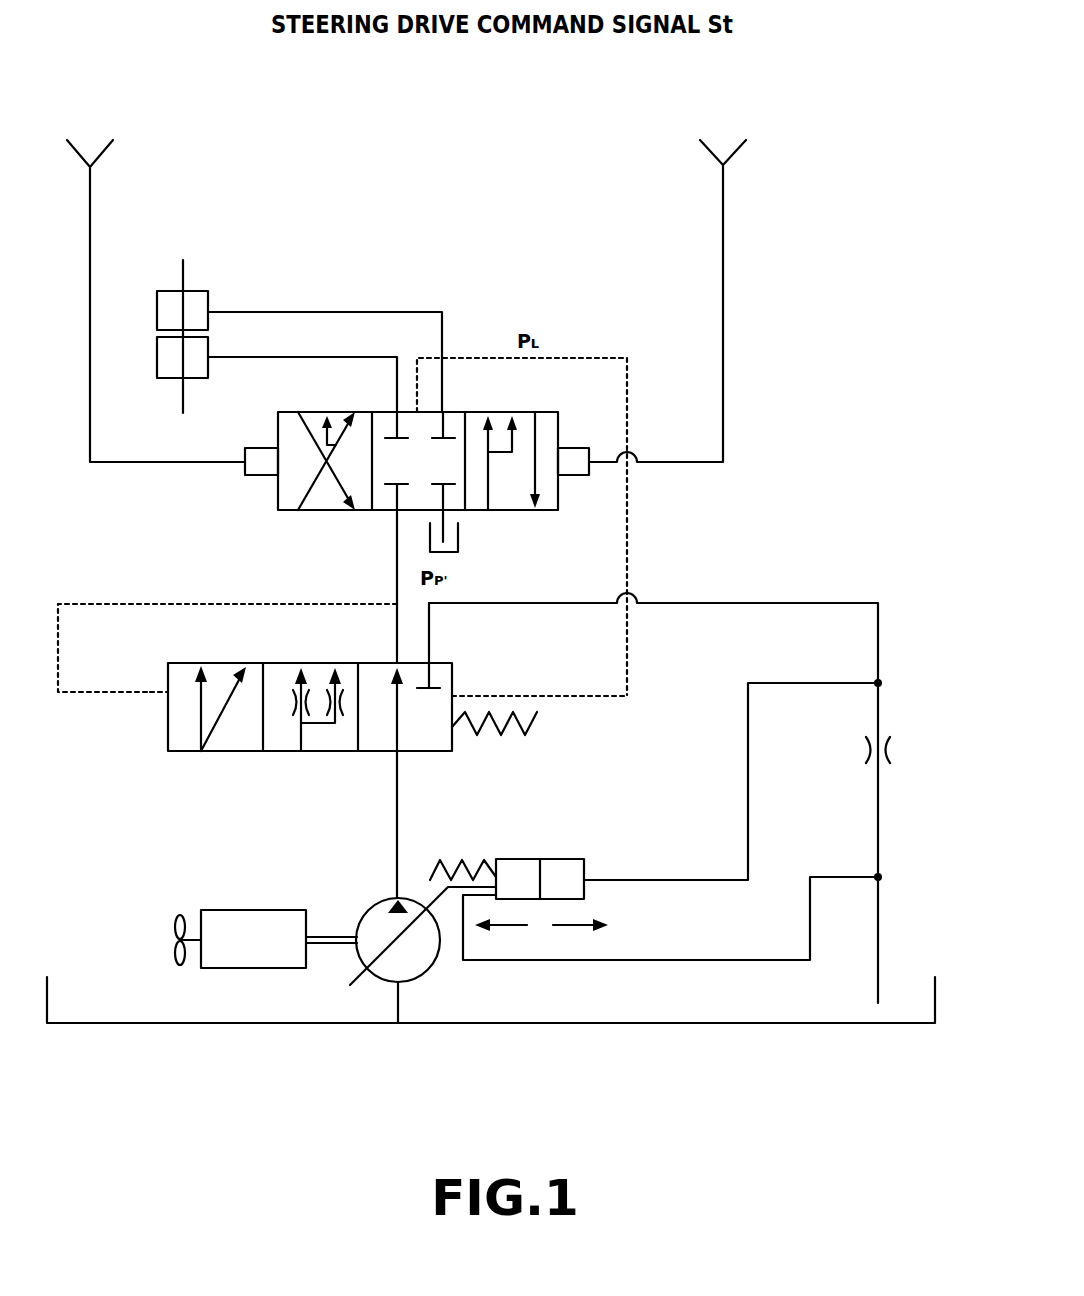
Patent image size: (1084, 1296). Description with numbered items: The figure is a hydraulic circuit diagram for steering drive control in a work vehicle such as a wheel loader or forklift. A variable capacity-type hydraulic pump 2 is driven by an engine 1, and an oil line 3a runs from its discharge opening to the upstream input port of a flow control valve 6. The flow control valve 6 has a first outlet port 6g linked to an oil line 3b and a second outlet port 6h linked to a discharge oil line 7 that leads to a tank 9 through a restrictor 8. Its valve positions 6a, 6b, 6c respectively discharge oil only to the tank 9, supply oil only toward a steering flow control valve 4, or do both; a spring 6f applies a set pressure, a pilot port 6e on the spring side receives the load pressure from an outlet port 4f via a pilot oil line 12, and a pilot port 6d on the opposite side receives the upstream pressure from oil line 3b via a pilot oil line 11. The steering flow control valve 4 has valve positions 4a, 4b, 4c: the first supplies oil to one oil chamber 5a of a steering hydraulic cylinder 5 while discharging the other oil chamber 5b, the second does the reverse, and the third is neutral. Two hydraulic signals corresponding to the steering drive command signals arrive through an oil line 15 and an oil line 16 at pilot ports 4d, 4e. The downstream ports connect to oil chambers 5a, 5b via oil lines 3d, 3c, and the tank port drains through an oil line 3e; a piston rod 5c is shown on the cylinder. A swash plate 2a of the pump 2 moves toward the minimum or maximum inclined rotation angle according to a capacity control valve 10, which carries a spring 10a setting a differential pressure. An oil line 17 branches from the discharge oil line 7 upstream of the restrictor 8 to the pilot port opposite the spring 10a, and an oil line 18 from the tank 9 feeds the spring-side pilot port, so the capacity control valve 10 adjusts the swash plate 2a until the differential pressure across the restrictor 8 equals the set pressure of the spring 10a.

The engine 1 is at (243, 910).
The variable capacity-type hydraulic pump 2 is at (415, 947).
The swash plate 2a is at (432, 917).
The oil line 3a is at (397, 844).
The oil line 3b is at (395, 585).
The oil line 3c is at (283, 357).
The oil line 3d is at (330, 312).
The oil line 3e is at (445, 518).
The steering flow control valve 4 is at (451, 465).
The valve position 4a is at (305, 512).
The valve position 4b is at (553, 512).
The valve position 4c is at (382, 512).
The pilot port 4d is at (255, 478).
The pilot port 4e is at (578, 478).
The outlet port 4f is at (418, 410).
The steering hydraulic cylinder 5 is at (153, 329).
The oil chamber 5a is at (168, 291).
The oil chamber 5b is at (164, 378).
The piston rod 5c is at (185, 268).
The flow control valve 6 is at (348, 708).
The valve position 6a is at (185, 753).
The valve position 6b is at (372, 753).
The valve position 6c is at (287, 753).
The pilot port 6d is at (168, 690).
The pilot port 6e is at (452, 690).
The spring 6f is at (500, 735).
The first outlet port 6g is at (396, 660).
The second outlet port 6h is at (430, 655).
The discharge oil line 7 is at (755, 603).
The restrictor 8 is at (898, 744).
The tank 9 is at (452, 553).
The capacity control valve 10 is at (530, 842).
The spring 10a is at (458, 864).
The pilot oil line 11 is at (116, 604).
The pilot oil line 12 is at (627, 527).
The oil line 15 is at (92, 218).
The oil line 16 is at (725, 213).
The oil line 17 is at (748, 745).
The oil line 18 is at (758, 960).